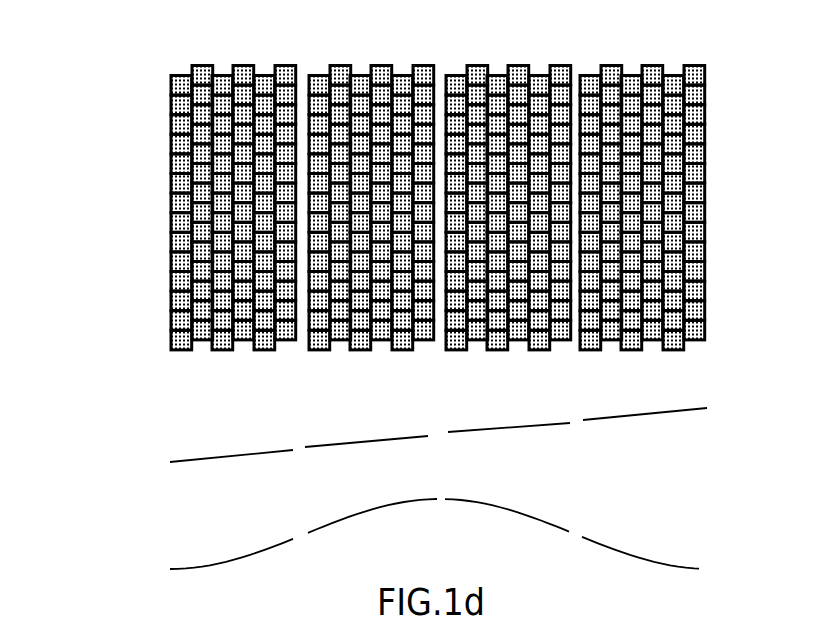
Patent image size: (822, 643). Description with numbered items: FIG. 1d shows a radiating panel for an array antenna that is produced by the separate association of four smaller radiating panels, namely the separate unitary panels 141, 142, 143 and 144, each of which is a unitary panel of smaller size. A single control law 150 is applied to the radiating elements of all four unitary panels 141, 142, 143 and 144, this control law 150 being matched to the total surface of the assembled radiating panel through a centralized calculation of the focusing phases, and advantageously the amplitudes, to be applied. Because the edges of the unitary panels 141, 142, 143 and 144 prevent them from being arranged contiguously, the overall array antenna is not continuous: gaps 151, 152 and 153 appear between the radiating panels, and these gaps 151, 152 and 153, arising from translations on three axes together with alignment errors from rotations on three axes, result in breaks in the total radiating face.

The unitary panel 141 is at (215, 64).
The unitary panel 142 is at (356, 64).
The unitary panel 143 is at (492, 64).
The unitary panel 144 is at (627, 64).
The gap 151 is at (304, 345).
The gap 152 is at (437, 353).
The gap 153 is at (574, 353).
The control law 150 is at (660, 507).